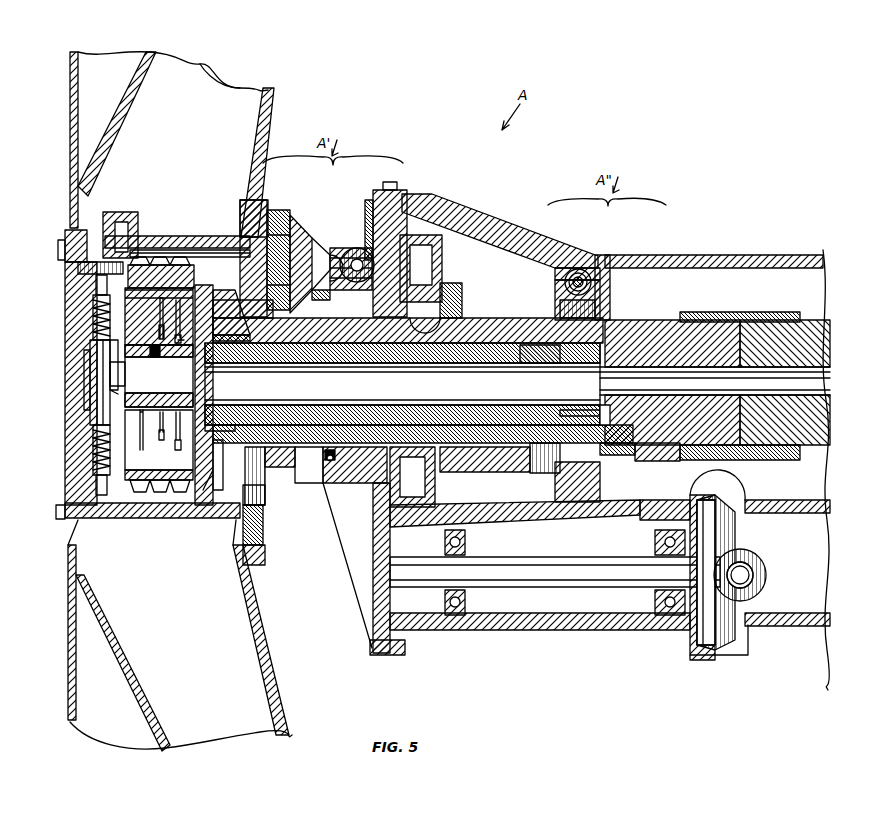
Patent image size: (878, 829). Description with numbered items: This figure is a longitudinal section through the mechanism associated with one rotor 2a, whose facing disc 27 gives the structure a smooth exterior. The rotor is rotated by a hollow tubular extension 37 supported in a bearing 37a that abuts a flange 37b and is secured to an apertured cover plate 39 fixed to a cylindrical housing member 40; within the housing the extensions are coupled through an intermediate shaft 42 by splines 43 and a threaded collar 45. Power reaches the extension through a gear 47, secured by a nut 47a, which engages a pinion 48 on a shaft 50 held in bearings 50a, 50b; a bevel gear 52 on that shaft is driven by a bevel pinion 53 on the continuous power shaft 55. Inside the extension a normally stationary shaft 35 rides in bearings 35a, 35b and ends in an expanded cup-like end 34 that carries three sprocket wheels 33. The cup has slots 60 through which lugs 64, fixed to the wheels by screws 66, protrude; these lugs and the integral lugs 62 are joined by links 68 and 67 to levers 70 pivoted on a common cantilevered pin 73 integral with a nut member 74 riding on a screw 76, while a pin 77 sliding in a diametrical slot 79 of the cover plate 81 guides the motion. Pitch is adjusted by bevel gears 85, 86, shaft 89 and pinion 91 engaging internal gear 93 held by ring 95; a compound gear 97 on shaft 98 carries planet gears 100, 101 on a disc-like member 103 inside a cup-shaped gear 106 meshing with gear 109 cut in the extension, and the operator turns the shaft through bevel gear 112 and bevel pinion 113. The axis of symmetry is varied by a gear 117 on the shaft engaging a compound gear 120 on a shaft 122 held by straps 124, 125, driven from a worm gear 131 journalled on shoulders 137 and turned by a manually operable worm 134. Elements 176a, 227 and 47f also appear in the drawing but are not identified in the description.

The facing disc 27 is at (70, 140).
The rotor 2a is at (226, 68).
The bevel gear 85 is at (70, 264).
The bevel gear 86 is at (124, 220).
The shaft 89 is at (190, 240).
The pinion 91 is at (237, 224).
The circular cover plate 81 is at (65, 454).
The screw 76 is at (93, 324).
The nut member 74 is at (90, 354).
The pin 77 is at (86, 382).
The diametrical slot 79 is at (90, 408).
The cantilevered pin 73 is at (151, 376).
The lever 70 is at (154, 356).
The slot 60 is at (160, 320).
The lug or tongue 64 is at (185, 281).
The screw 66 is at (180, 314).
The link 67 is at (168, 442).
The lug 62 is at (178, 454).
The link 68 is at (202, 295).
The expanded cup-like end 34 is at (194, 484).
The sprocket wheel 33 is at (154, 520).
The internal gear 93 is at (250, 282).
The compound gear 97 is at (248, 292).
The ring 95 is at (284, 204).
The shaft 35 is at (402, 384).
The bearing 35a is at (230, 406).
The bearing 35b is at (558, 410).
The gear 117 is at (567, 360).
The tubular extension 37 is at (516, 322).
The planet gear 101 is at (274, 324).
The planet gear 100 is at (292, 222).
The cup-shaped gear 106 is at (316, 244).
The shaft 98 is at (334, 304).
The disc-like member 103 is at (344, 248).
The bevel gear 112 is at (366, 204).
The bevel pinion 113 is at (368, 212).
The gear 47 is at (440, 260).
The nut 47a is at (462, 300).
The sloped plate 176a is at (430, 204).
The worm 134 is at (608, 240).
The bracket 227 is at (610, 250).
The shoulder 137 is at (610, 284).
The worm gear 131 is at (608, 308).
The cylindrical housing member 40 is at (726, 242).
The threaded collar 45 is at (766, 302).
The spline 43 is at (736, 392).
The intermediate shaft 42 is at (824, 436).
The shaft 122 is at (616, 404).
The strap 124 is at (530, 452).
The compound gear 120 is at (622, 452).
The strap 125 is at (656, 456).
The cover plate 39 is at (374, 594).
The pinion 48 is at (438, 612).
The gear 109 is at (270, 477).
The flange 37b is at (314, 474).
The bearing 37a is at (316, 490).
The pin 47f is at (336, 480).
The shaft 50 is at (580, 568).
The bearing 50a is at (476, 550).
The bearing 50b is at (652, 548).
The bevel gear 52 is at (722, 532).
The bevel pinion 53 is at (764, 582).
The power shaft 55 is at (758, 564).